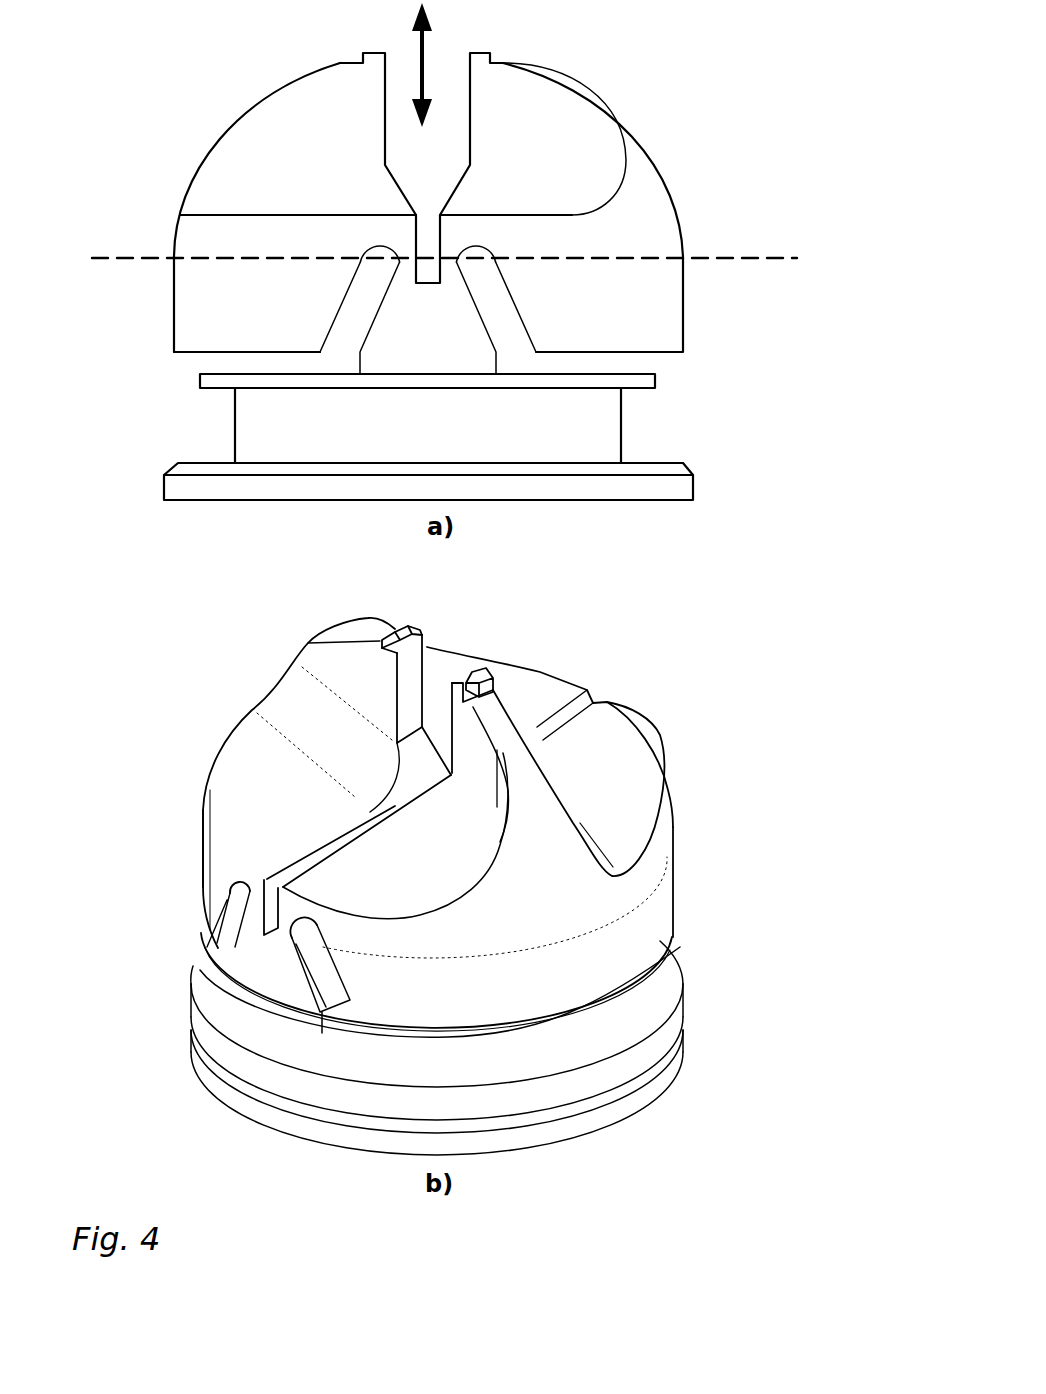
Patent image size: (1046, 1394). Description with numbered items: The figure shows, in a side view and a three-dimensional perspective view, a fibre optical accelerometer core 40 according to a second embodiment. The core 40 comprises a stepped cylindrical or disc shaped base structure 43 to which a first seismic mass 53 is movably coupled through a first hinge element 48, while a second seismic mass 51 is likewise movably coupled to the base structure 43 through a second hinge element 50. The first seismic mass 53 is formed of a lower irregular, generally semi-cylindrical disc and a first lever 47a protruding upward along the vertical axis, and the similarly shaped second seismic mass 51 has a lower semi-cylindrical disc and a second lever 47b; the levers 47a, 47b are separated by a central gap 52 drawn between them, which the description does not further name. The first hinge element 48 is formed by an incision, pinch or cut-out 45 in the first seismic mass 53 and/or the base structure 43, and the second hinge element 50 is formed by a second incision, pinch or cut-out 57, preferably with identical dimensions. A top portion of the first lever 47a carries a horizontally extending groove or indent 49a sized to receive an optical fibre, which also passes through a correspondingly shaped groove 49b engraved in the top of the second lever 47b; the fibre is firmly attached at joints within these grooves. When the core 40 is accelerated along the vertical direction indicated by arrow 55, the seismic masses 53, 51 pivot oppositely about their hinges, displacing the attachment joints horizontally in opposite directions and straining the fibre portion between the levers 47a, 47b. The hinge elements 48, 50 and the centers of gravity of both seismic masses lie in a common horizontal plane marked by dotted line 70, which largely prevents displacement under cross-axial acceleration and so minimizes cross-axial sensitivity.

The fibre optical accelerometer core 40 is at (514, 840).
The stepped disc shaped base structure 43 is at (411, 763).
The incision, pinch or cut-out 45 is at (485, 413).
The first lever 47a is at (492, 486).
The second lever 47b is at (282, 500).
The first hinge element 48 is at (294, 904).
The groove 49a is at (537, 653).
The second groove 49b is at (334, 612).
The second hinge element 50 is at (182, 905).
The second seismic mass 51 is at (219, 566).
The central slot 52 is at (376, 198).
The first seismic mass 53 is at (495, 638).
The vertical arrow 55 is at (357, 64).
The second incision, pinch or cut-out 57 is at (180, 347).
The common horizontal plane 70 is at (501, 227).